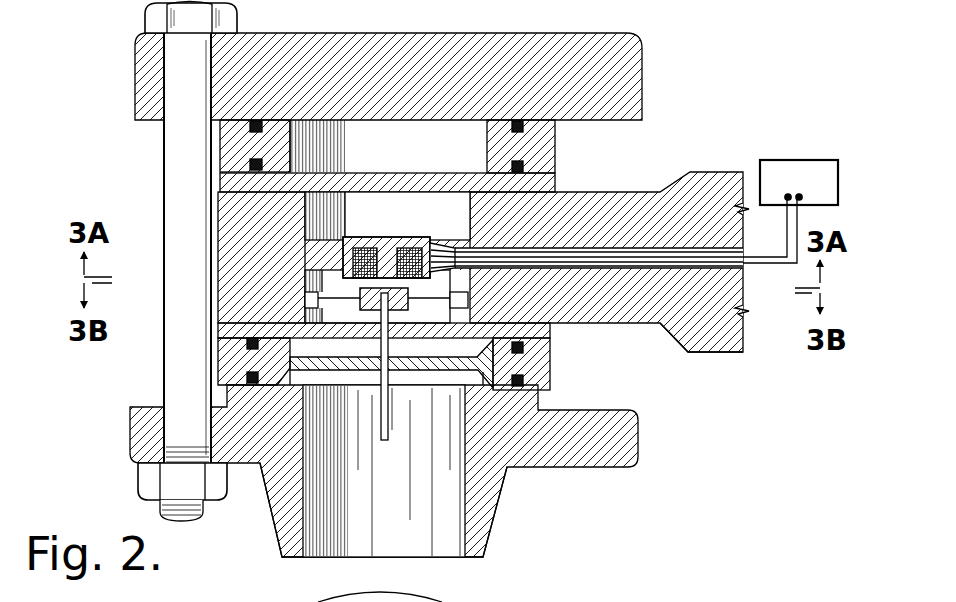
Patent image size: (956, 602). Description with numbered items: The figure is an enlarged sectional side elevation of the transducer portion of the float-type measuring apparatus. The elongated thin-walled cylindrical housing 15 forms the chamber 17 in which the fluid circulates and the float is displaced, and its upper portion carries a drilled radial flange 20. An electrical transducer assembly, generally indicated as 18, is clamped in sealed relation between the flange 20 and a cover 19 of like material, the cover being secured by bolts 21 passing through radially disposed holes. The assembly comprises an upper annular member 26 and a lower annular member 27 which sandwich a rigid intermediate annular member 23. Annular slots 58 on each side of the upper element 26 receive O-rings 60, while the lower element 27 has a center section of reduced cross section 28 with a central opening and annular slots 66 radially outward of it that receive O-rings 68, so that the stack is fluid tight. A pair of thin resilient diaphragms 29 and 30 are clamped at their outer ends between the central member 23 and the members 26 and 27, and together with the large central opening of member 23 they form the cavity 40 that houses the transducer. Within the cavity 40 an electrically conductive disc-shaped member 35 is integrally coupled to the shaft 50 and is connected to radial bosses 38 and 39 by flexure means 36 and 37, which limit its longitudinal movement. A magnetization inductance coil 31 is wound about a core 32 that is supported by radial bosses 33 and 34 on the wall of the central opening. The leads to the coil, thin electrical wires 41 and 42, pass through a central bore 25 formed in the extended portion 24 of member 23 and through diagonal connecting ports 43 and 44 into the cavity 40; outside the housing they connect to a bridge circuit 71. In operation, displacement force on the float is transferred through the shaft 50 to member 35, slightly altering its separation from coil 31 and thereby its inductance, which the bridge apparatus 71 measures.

The cylindrical housing 15 is at (496, 512).
The chamber 17 is at (395, 507).
The electrical transducer assembly 18 is at (672, 128).
The cover 19 is at (630, 74).
The radial flange 20 is at (638, 436).
The bolt 21 is at (166, 160).
The intermediate annular member 23 is at (230, 213).
The extended portion 24 is at (634, 330).
The central bore 25 is at (616, 247).
The upper annular member 26 is at (556, 145).
The lower annular member 27 is at (220, 358).
The reduced cross section 28 is at (412, 370).
The upper resilient diaphragm 29 is at (556, 184).
The lower resilient diaphragm 30 is at (552, 334).
The magnetization inductance coil 31 is at (406, 248).
The core 32 is at (357, 238).
The radial boss 33 is at (321, 238).
The radial boss 34 is at (462, 240).
The disc-shaped member 35 is at (410, 301).
The flexure means 36 is at (324, 302).
The flexure means 37 is at (407, 297).
The radial boss 38 is at (314, 296).
The radial boss 39 is at (453, 263).
The cavity 40 is at (380, 214).
The electrical wire 41 is at (752, 259).
The electrical wire 42 is at (752, 266).
The connecting port 43 is at (448, 248).
The connecting port 44 is at (462, 266).
The shaft 50 is at (387, 426).
The annular slot 58 is at (257, 120).
The O-ring 60 is at (262, 162).
The annular slot 66 is at (250, 343).
The O-ring 68 is at (525, 380).
The bridge circuit 71 is at (781, 161).